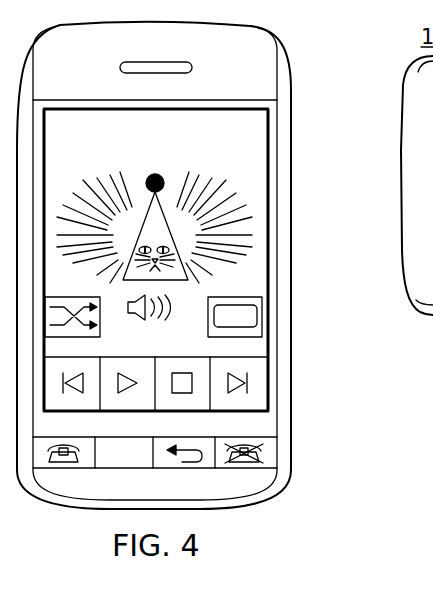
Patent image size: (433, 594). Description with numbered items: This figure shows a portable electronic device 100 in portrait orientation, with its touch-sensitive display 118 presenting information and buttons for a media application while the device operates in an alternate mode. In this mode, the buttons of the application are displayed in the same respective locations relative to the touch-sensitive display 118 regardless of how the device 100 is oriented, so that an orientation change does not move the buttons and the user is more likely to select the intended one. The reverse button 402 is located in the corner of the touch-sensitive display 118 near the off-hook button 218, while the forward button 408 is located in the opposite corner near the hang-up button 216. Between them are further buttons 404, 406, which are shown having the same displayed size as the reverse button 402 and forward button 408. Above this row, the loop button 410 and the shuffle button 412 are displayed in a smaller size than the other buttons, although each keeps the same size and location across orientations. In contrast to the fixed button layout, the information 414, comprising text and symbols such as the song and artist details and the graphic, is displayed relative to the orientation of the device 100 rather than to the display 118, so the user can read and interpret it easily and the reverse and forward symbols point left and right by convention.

The portable electronic device 100 is at (57, 18).
The touch-sensitive display 118 is at (255, 131).
The information 414 is at (245, 195).
The shuffle button 412 is at (100, 296).
The loop button 410 is at (246, 326).
The forward button 408 is at (260, 402).
The button 406 is at (197, 398).
The button 404 is at (133, 400).
The reverse button 402 is at (90, 398).
The hang-up button 216 is at (268, 453).
The off-hook button 218 is at (82, 458).